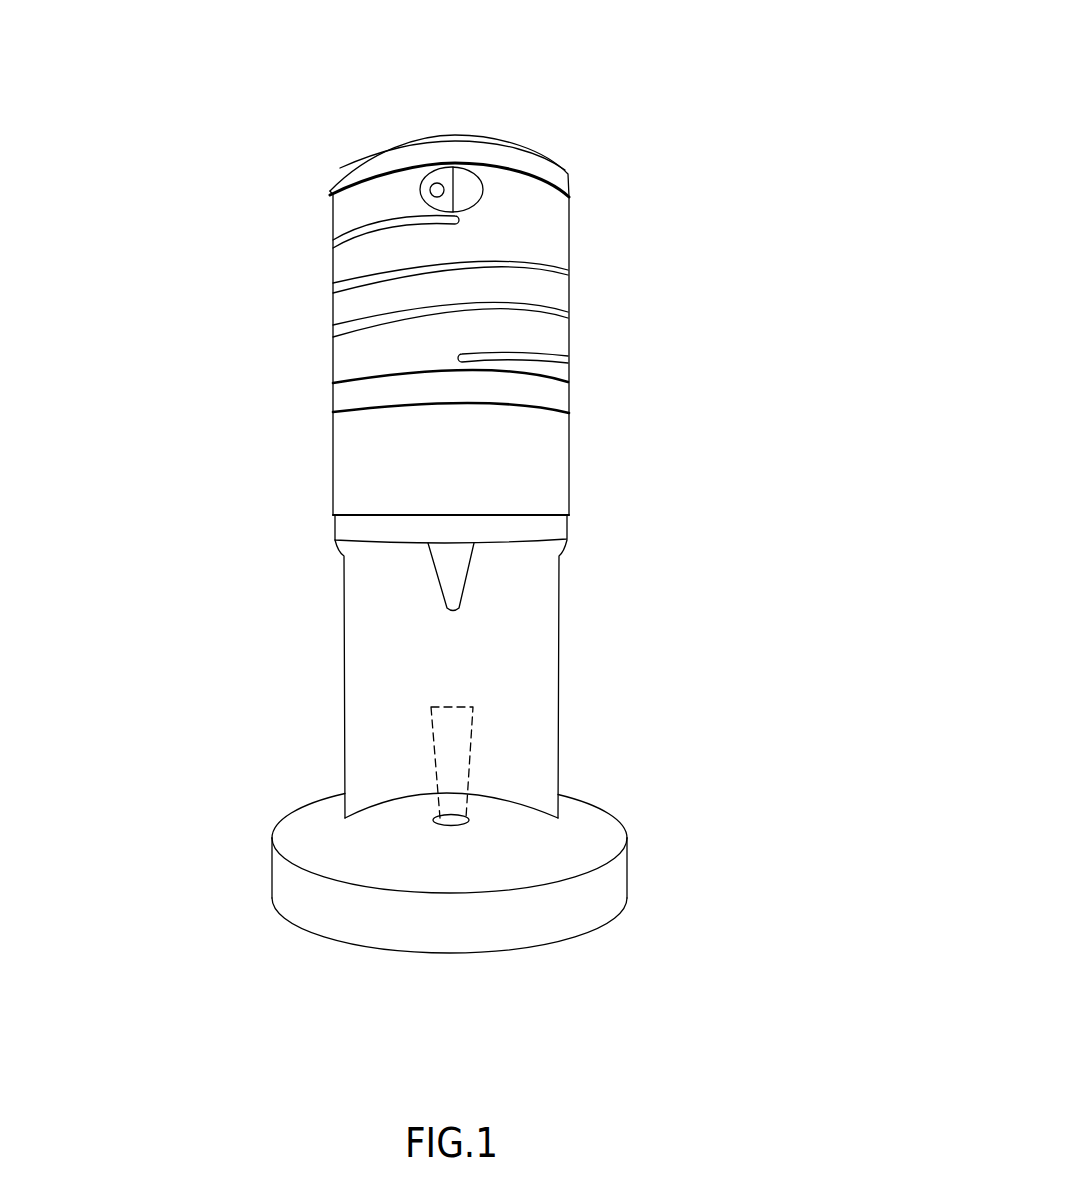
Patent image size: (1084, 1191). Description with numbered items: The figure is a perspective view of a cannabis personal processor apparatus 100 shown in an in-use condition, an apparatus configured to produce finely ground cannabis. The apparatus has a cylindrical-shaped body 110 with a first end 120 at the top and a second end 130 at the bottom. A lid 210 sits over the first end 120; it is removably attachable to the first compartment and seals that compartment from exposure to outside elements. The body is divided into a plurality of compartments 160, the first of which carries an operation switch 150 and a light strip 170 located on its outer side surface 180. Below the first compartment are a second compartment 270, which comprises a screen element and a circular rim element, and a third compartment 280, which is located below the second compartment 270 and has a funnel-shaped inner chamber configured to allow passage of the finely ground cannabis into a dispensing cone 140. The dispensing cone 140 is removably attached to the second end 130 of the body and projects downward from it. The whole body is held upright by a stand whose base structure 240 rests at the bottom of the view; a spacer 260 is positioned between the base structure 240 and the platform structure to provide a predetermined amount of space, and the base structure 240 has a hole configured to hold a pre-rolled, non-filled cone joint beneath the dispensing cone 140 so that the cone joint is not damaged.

The cannabis personal processor apparatus 100 is at (654, 66).
The cylindrical-shaped body 110 is at (562, 338).
The first end 120 is at (570, 235).
The second end 130 is at (550, 485).
The dispensing cone 140 is at (445, 567).
The operation switch 150 is at (473, 187).
The plurality of compartments 160 is at (350, 260).
The light strip 170 is at (570, 268).
The outer side surface 180 is at (342, 350).
The lid 210 is at (538, 163).
The base structure 240 is at (613, 888).
The spacer 260 is at (545, 599).
The second compartment 270 is at (562, 397).
The third compartment 280 is at (350, 463).